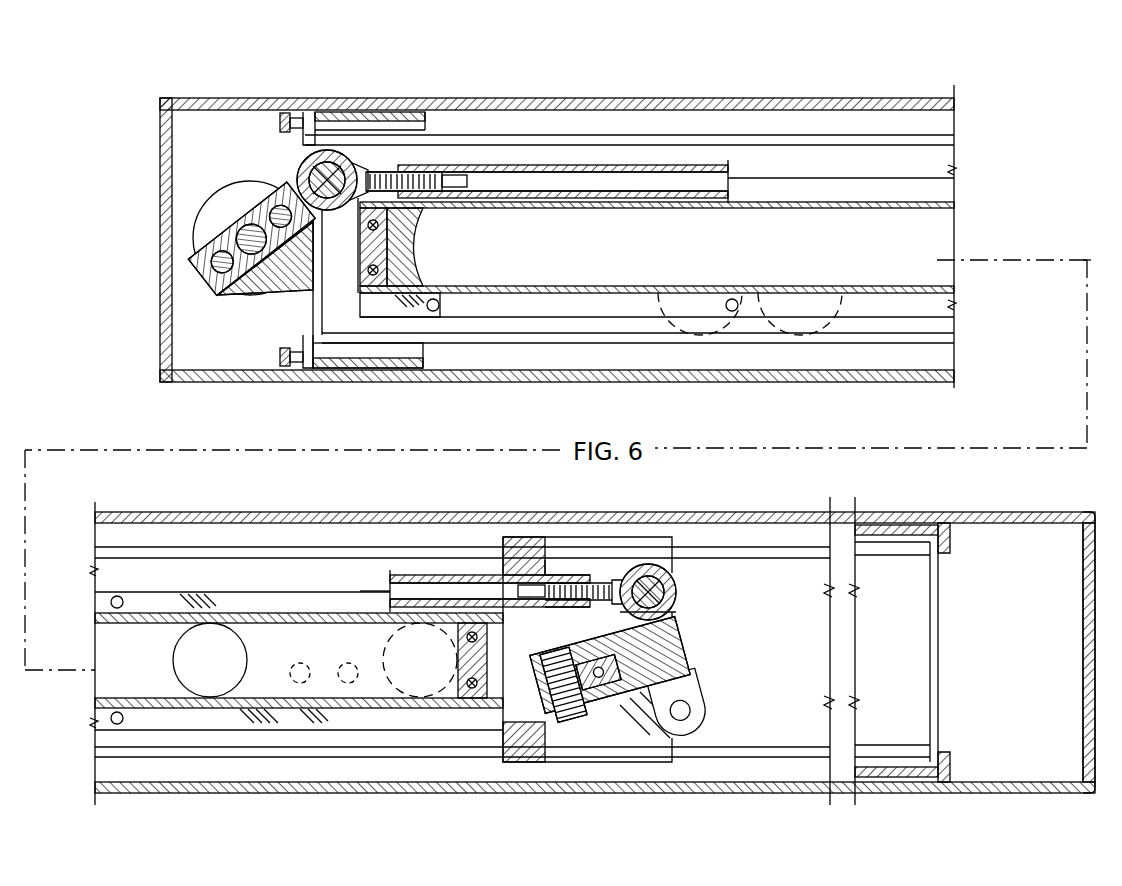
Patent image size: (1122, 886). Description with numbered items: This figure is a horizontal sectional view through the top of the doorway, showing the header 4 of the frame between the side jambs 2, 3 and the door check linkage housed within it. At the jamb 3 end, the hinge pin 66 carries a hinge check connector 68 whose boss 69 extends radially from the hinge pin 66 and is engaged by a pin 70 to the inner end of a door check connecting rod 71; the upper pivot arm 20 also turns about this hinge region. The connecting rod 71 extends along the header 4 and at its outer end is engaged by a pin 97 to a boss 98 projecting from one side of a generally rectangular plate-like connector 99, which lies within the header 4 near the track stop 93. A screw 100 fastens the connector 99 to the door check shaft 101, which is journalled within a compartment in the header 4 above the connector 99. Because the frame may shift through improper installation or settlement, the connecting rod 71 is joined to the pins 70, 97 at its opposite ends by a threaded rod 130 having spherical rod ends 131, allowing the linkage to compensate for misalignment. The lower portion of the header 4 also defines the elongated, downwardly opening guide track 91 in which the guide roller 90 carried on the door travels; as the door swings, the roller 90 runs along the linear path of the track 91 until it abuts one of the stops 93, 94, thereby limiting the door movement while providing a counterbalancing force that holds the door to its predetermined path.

The side jamb 2 is at (1040, 512).
The side jamb 3 is at (160, 128).
The header 4 is at (605, 97).
The upper pivot arm 20 is at (222, 217).
The hinge pin 66 is at (237, 238).
The hinge check connector 68 is at (190, 257).
The boss 69 is at (290, 188).
The pin 70 is at (305, 167).
The door check connecting rod 71 is at (612, 165).
The guide roller 90 is at (205, 660).
The guide track 91 is at (450, 270).
The stop 93 is at (470, 700).
The stop 94 is at (398, 275).
The pin 97 is at (672, 585).
The boss 98 is at (682, 607).
The connector 99 is at (693, 652).
The screw 100 is at (598, 687).
The door check shaft 101 is at (602, 692).
The threaded rod 130 is at (385, 172).
The spherical rod end 131 is at (350, 160).